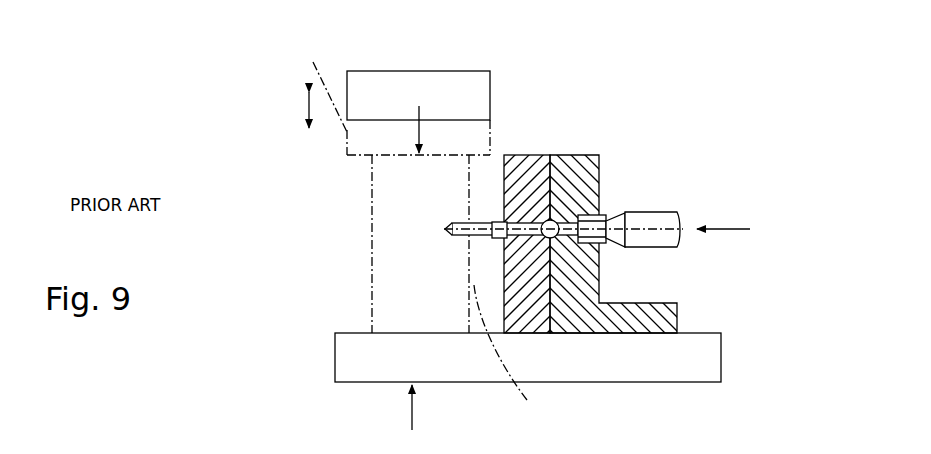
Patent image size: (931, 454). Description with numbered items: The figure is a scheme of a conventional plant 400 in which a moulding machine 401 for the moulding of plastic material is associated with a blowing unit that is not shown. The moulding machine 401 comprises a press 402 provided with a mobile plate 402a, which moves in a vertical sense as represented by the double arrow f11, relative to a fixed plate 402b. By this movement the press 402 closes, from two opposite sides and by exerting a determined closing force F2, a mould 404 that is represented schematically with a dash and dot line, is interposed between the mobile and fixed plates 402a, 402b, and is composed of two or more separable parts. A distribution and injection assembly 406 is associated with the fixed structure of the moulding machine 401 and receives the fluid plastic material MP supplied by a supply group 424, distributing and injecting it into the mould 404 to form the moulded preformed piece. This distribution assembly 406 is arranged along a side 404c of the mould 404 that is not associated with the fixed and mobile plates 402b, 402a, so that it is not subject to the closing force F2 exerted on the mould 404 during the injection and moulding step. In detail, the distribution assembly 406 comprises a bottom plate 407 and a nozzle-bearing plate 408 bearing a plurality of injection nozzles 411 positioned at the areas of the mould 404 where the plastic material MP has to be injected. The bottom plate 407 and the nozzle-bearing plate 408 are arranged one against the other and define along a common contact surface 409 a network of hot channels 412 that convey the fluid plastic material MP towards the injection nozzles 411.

The plant 400 is at (165, 92).
The moulding machine 401 is at (617, 86).
The press 402 is at (280, 233).
The mobile plate 402a is at (347, 86).
The fixed plate 402b is at (340, 362).
The mould 404 is at (372, 220).
The side of the mould 404c is at (517, 355).
The distribution and injection assembly 406 is at (618, 176).
The bottom plate 407 is at (584, 157).
The nozzle-bearing plate 408 is at (528, 157).
The common contact surface 409 is at (557, 192).
The injection nozzles 411 is at (479, 222).
The hot channels 412 is at (598, 262).
The supply group 424 is at (662, 214).
The closing force F2 is at (412, 128).
The double arrow f11 is at (306, 108).
The fluid plastic material MP is at (748, 229).